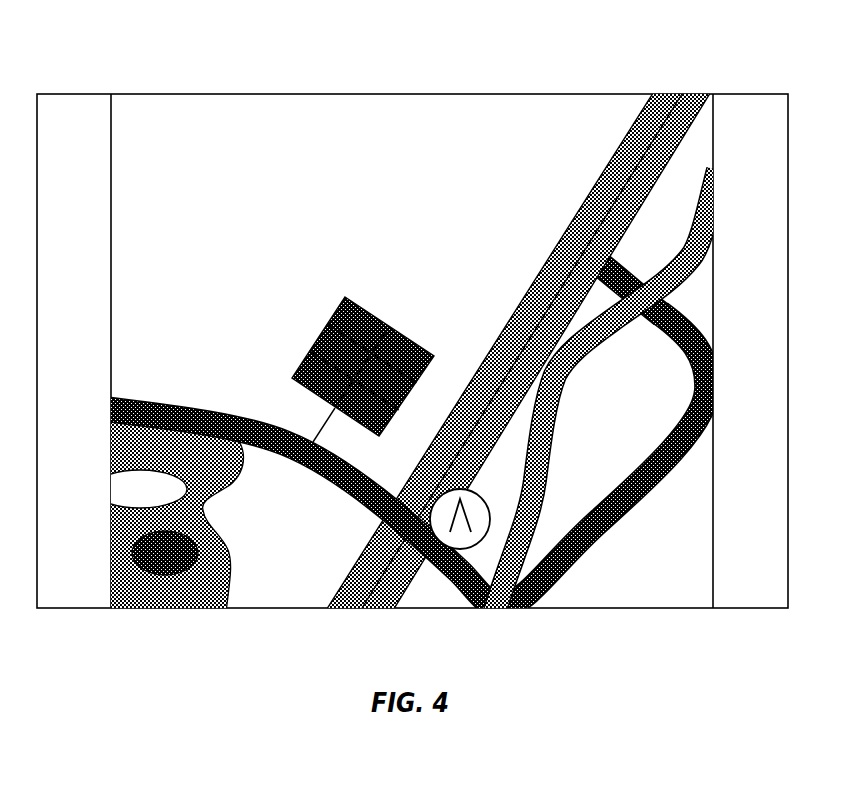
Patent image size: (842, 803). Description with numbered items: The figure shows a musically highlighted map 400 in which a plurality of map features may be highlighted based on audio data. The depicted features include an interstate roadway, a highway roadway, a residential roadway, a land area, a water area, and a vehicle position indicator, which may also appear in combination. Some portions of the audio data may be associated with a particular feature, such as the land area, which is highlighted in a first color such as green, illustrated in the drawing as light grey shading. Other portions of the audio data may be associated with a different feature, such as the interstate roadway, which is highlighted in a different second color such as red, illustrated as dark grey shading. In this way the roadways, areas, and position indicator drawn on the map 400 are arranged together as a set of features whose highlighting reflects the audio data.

The musically highlighted map 400 is at (170, 59).